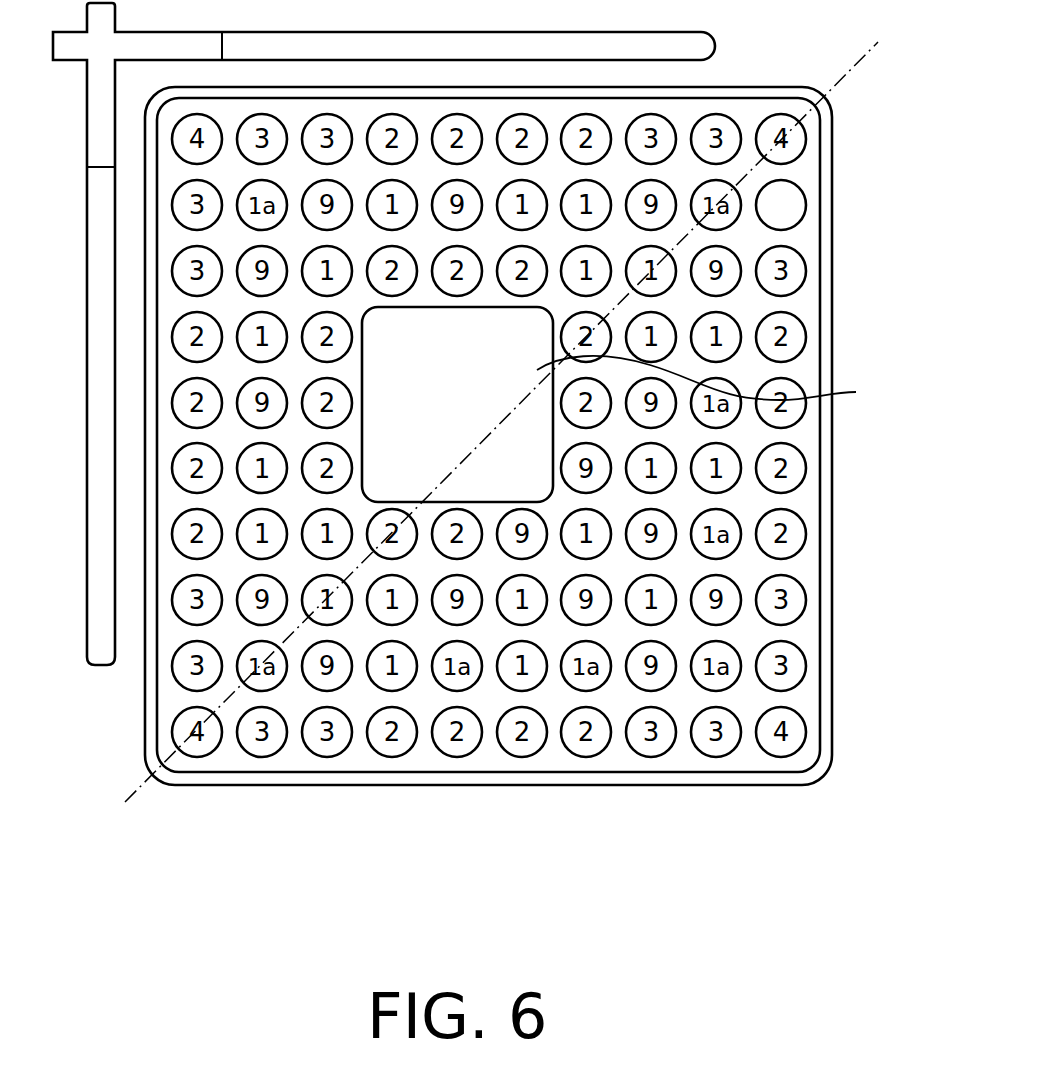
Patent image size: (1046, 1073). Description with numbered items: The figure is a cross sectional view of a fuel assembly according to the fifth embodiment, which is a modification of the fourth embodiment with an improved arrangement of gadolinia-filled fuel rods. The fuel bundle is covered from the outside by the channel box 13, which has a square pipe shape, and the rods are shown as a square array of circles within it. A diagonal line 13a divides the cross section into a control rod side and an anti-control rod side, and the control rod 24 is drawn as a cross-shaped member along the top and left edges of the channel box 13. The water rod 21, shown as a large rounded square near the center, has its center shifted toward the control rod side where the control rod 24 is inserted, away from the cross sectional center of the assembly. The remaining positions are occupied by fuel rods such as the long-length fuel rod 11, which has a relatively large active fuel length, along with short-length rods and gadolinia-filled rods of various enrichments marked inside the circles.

The control rod 24 is at (712, 42).
The diagonal line 13a is at (855, 70).
The long-length fuel rod 11 is at (800, 207).
The water rod 21 is at (715, 382).
The channel box 13 is at (832, 530).